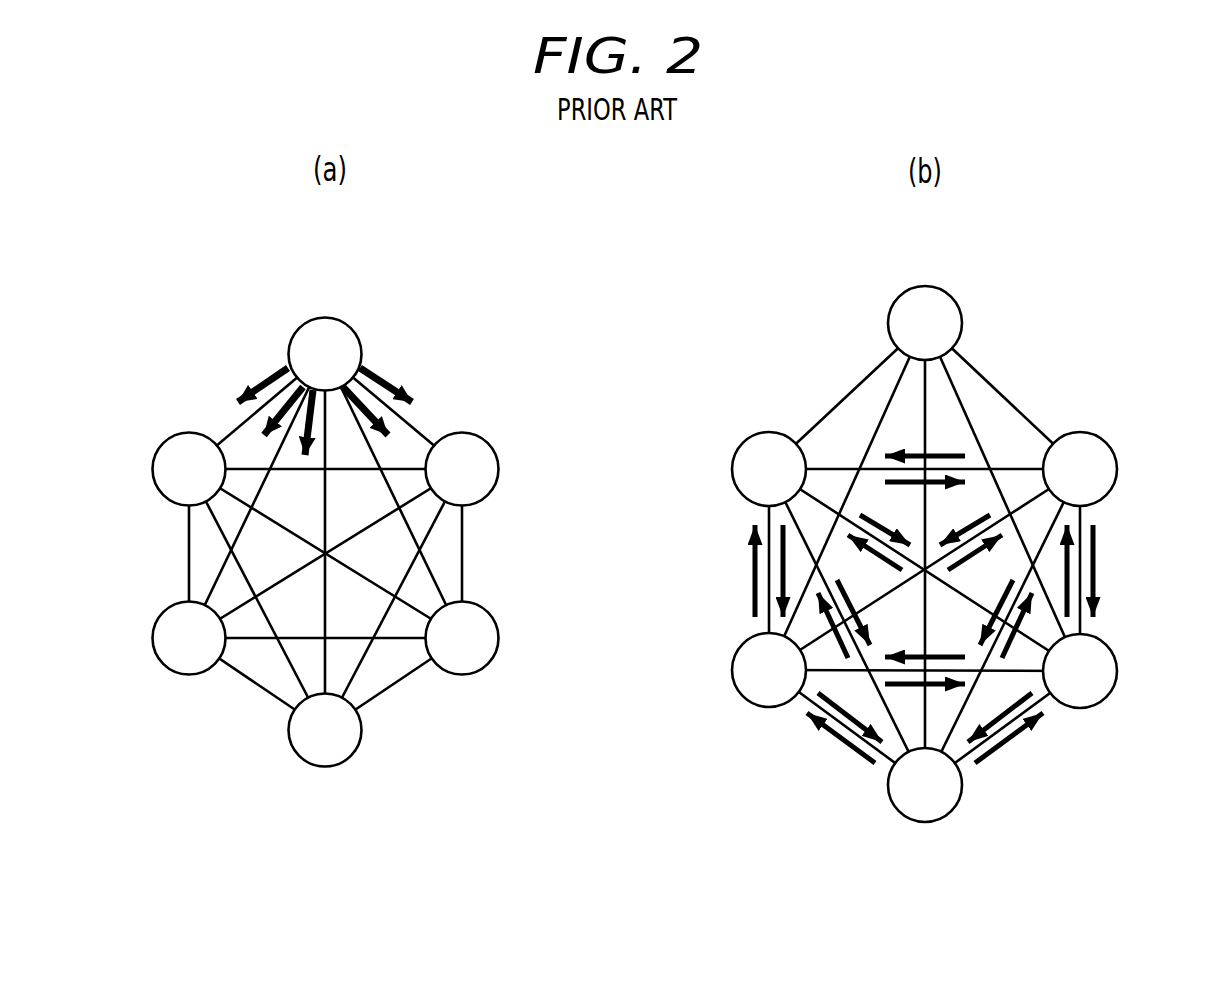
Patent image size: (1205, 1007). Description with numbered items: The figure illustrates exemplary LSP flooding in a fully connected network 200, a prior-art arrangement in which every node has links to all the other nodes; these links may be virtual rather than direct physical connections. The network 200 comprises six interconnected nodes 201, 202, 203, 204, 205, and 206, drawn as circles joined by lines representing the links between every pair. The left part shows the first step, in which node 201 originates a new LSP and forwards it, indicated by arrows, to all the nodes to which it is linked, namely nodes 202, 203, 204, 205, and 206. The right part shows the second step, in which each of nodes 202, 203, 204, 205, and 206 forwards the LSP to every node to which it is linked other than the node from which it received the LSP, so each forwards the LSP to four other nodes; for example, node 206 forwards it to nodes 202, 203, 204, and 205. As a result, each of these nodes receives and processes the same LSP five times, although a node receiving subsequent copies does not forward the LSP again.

The fully connected network 200 is at (347, 251).
The node 201 is at (351, 327).
The node 202 is at (152, 469).
The node 203 is at (499, 469).
The node 204 is at (152, 638).
The node 205 is at (499, 638).
The node 206 is at (325, 767).